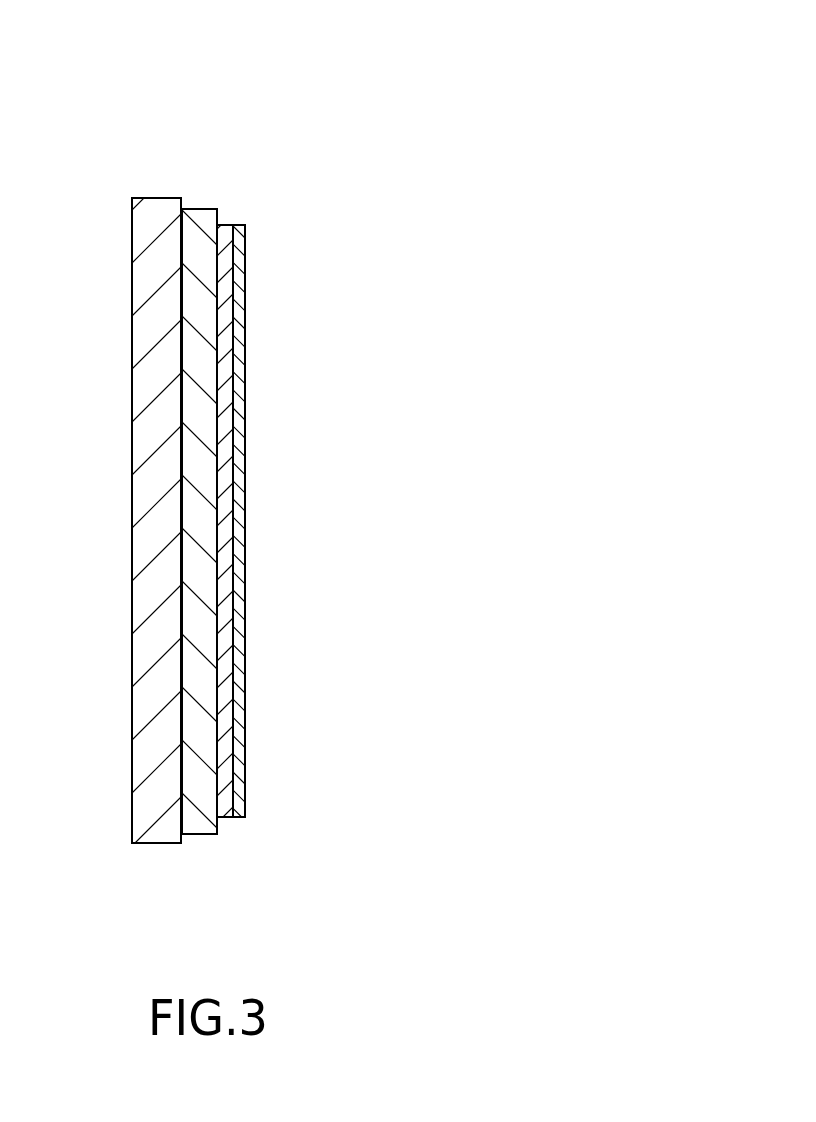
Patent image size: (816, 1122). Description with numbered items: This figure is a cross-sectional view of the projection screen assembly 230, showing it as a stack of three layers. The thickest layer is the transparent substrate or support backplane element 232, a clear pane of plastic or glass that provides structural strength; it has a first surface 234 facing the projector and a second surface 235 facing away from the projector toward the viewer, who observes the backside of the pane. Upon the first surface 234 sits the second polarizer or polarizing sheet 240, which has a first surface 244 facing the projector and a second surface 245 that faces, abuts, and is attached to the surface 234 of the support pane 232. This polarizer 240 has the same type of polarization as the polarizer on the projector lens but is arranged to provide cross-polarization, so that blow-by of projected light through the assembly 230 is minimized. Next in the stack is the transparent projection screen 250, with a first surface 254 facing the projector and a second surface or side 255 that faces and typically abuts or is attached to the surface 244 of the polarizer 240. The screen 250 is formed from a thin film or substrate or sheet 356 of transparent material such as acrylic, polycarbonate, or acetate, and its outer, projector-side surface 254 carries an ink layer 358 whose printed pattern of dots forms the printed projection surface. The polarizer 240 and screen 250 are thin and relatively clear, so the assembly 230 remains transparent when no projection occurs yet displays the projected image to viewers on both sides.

The projection screen assembly 230 is at (360, 122).
The transparent substrate or support backplane element 232 is at (154, 184).
The first surface of the support pane 234 is at (186, 208).
The second surface of the support pane 235 is at (137, 239).
The second polarizer or polarizing sheet 240 is at (197, 862).
The first surface of the second polarizer 244 is at (220, 822).
The second surface of the second polarizer 245 is at (180, 822).
The transparent projection screen 250 is at (248, 198).
The first surface of the transparent projection screen 254 is at (245, 252).
The second surface or side of the transparent projection screen 255 is at (216, 240).
The thin film or substrate or sheet 356 is at (251, 840).
The ink layer 358 is at (270, 820).